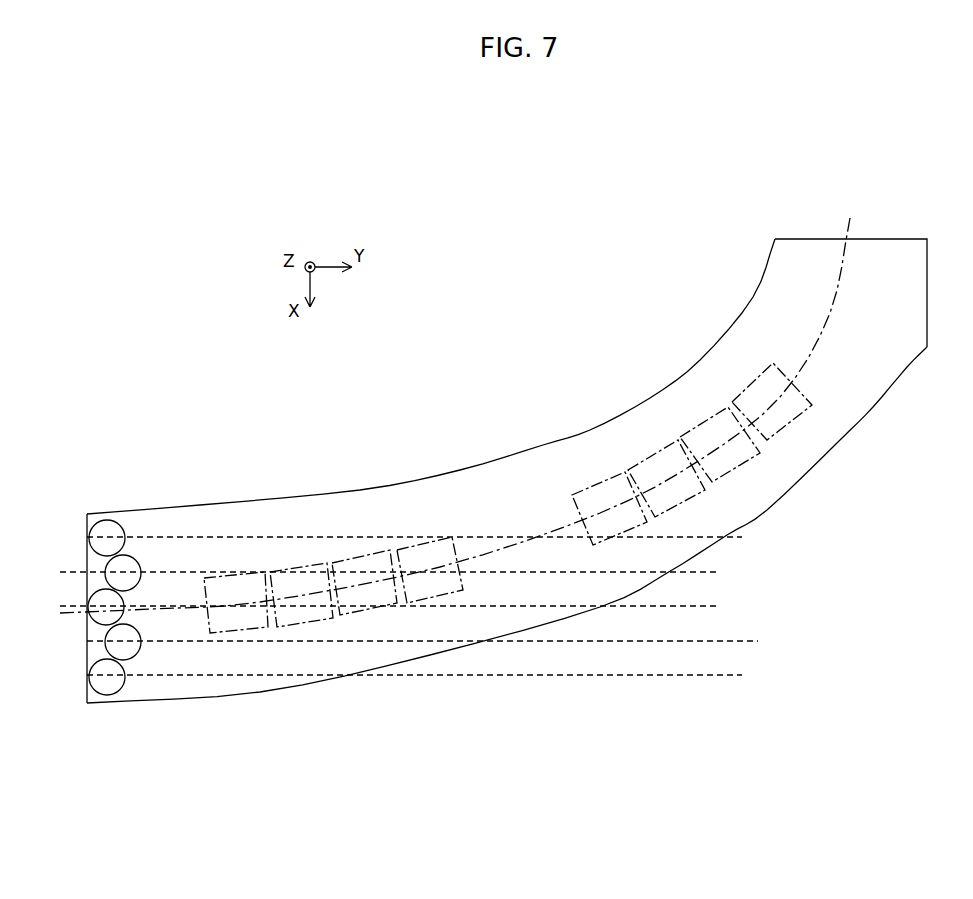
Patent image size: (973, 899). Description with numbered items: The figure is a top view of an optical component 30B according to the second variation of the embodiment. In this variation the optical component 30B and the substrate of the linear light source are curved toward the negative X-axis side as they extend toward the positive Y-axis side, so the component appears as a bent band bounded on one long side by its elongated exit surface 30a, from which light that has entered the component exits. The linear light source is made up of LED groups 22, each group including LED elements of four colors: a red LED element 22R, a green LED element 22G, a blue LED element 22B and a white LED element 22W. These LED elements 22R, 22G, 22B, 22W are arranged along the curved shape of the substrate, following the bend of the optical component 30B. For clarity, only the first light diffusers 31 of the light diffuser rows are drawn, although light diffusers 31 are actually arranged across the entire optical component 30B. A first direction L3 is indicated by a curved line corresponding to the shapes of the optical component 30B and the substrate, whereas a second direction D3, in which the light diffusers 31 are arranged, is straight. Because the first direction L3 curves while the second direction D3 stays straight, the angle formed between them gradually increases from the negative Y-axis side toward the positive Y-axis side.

The optical component 30B is at (517, 429).
The exit surface 30a is at (677, 408).
The first light diffusers 31 is at (107, 532).
The LED groups 22 is at (493, 588).
The red LED element 22R is at (223, 633).
The green LED element 22G is at (300, 624).
The blue LED element 22B is at (363, 613).
The white LED element 22W is at (436, 658).
The first direction L3 is at (477, 550).
The second direction D3 is at (560, 572).